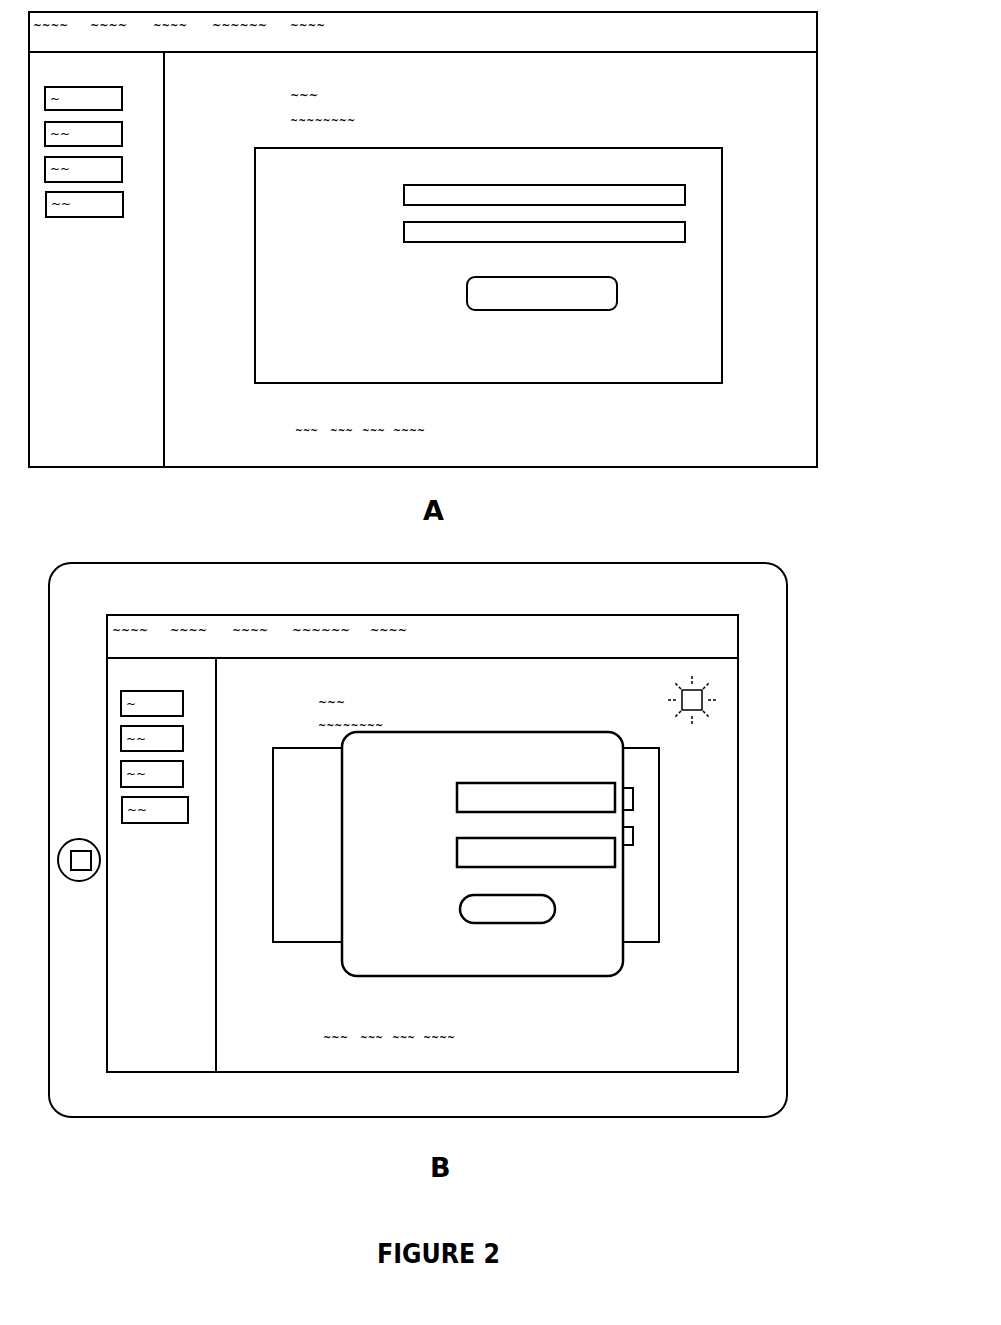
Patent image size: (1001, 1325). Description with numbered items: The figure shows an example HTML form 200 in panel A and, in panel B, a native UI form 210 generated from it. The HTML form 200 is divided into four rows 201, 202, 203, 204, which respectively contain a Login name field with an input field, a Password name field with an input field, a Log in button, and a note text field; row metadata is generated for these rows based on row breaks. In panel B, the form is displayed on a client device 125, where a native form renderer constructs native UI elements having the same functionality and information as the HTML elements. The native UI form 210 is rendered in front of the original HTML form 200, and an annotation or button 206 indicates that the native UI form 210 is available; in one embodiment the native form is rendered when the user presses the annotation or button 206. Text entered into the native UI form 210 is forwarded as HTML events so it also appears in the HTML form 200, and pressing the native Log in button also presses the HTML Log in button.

The client device 125 is at (782, 1072).
The HTML form 200 is at (722, 240).
The row 201 is at (290, 177).
The row 202 is at (290, 217).
The row 203 is at (617, 292).
The row 204 is at (596, 348).
The annotation or button 206 is at (703, 710).
The native UI form 210 is at (605, 877).